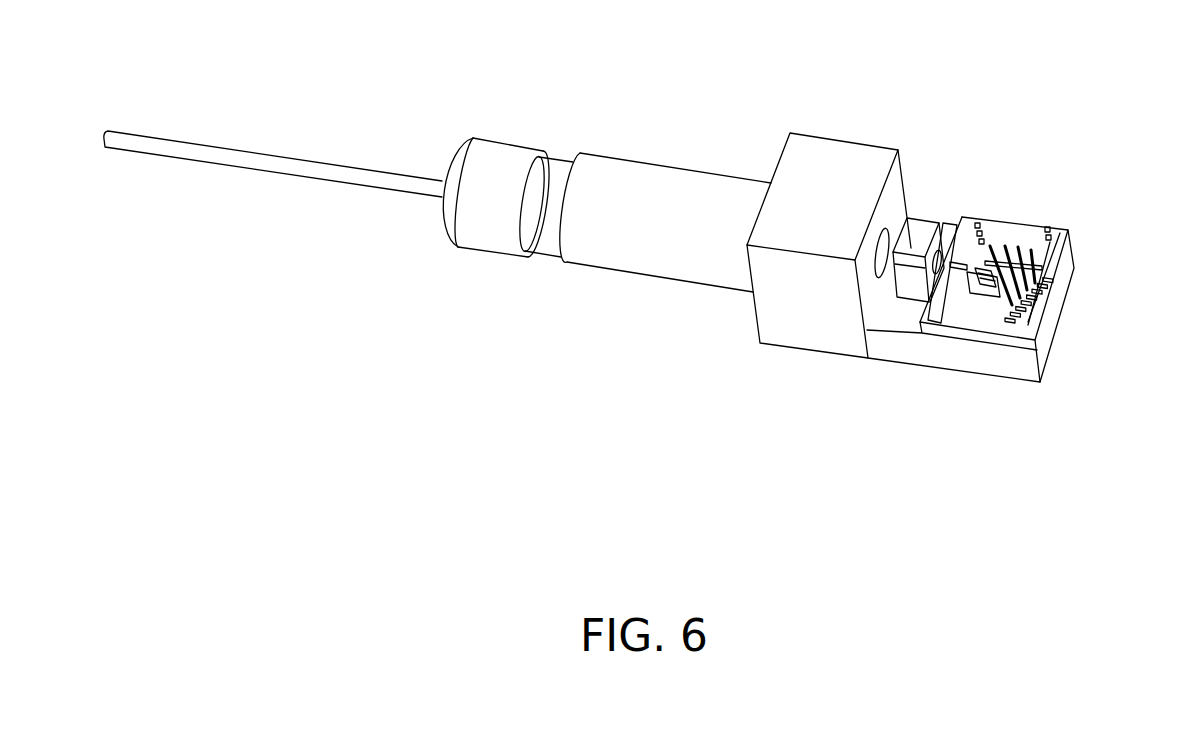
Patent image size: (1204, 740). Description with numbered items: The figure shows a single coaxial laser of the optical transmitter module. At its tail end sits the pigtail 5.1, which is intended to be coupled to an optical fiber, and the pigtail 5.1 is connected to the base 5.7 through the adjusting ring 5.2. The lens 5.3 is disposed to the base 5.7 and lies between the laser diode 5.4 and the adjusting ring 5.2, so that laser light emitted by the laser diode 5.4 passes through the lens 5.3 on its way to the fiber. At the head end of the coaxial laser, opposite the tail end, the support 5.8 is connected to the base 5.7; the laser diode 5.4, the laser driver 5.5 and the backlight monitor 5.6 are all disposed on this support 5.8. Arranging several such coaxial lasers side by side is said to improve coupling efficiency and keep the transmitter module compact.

The pigtail 5.1 is at (468, 141).
The adjusting ring 5.2 is at (677, 168).
The lens 5.3 is at (931, 222).
The laser diode 5.4 is at (947, 283).
The laser driver 5.5 is at (1020, 233).
The backlight monitor 5.6 is at (982, 290).
The base 5.7 is at (1031, 383).
The support 5.8 is at (1058, 268).